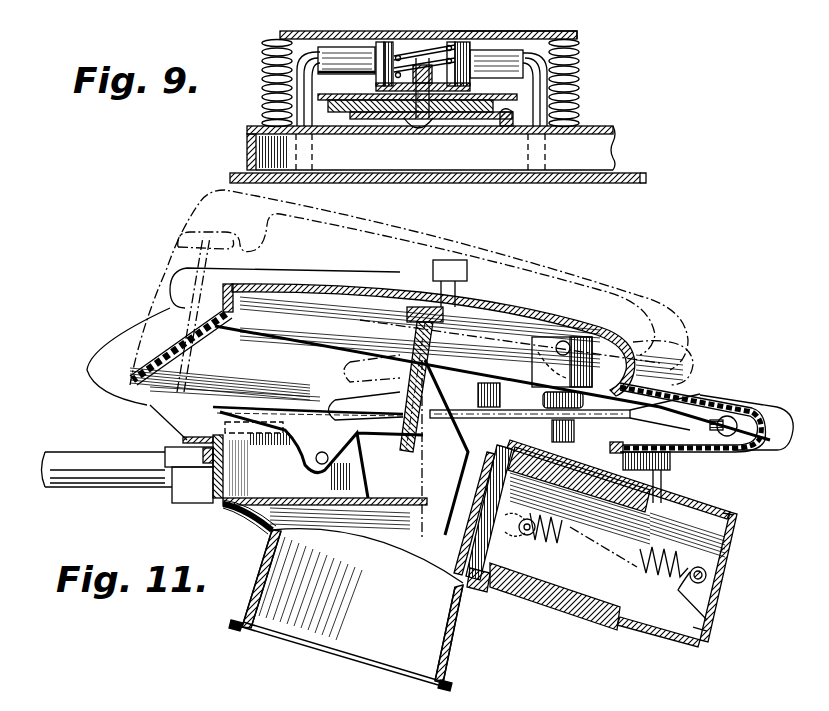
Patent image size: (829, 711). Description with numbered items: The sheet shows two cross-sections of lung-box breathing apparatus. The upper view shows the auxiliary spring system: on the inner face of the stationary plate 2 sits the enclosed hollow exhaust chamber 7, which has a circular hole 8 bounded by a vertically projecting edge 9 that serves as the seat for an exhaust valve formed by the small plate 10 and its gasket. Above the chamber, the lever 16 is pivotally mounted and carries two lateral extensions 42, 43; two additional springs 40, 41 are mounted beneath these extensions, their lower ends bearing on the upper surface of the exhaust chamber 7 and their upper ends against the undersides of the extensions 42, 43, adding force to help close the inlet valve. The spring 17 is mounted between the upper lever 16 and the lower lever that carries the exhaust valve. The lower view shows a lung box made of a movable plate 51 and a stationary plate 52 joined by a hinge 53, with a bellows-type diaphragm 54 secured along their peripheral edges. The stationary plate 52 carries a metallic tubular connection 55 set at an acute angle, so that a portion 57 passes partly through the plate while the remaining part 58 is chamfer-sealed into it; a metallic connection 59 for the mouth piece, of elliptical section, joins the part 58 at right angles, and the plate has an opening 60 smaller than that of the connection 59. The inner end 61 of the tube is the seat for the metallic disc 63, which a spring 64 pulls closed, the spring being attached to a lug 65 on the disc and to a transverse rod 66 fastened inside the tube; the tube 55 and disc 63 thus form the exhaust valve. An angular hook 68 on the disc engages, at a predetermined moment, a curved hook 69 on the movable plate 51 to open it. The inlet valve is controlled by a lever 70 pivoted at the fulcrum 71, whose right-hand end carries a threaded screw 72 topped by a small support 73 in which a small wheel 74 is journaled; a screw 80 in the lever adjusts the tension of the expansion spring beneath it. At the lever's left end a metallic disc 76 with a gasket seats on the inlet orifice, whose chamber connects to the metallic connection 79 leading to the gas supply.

In FIG. 9, the stationary plate 2 is at (596, 184).
In FIG. 9, the exhaust chamber 7 is at (268, 151).
In FIG. 9, the circular hole 8 is at (373, 131).
In FIG. 9, the vertically projecting edge 9 is at (512, 125).
In FIG. 9, the small plate 10 is at (457, 130).
In FIG. 9, the lever 16 is at (418, 31).
In FIG. 9, the spring 17 is at (428, 47).
In FIG. 9, the additional spring 40 is at (262, 50).
In FIG. 9, the additional spring 41 is at (578, 84).
In FIG. 9, the lateral extension 42 is at (320, 31).
In FIG. 9, the lateral extension 43 is at (522, 31).
In FIG. 11, the movable plate 51 is at (527, 310).
In FIG. 11, the stationary plate 52 is at (197, 497).
In FIG. 11, the hinge 53 is at (733, 436).
In FIG. 11, the diaphragm 54 is at (714, 398).
In FIG. 11, the metallic tubular connection 55 is at (650, 620).
In FIG. 11, the portion of the connection 57 is at (653, 493).
In FIG. 11, the remaining part 58 is at (557, 613).
In FIG. 11, the metallic connection for the mouth piece 59 is at (353, 643).
In FIG. 11, the opening 60 is at (406, 510).
In FIG. 11, the inner end of the tubular element 61 is at (487, 594).
In FIG. 11, the metallic disc 63 is at (463, 566).
In FIG. 11, the spring 64 is at (712, 607).
In FIG. 11, the lug 65 is at (535, 532).
In FIG. 11, the transverse rod 66 is at (710, 578).
In FIG. 11, the angular hook 68 is at (352, 395).
In FIG. 11, the curved hook 69 is at (398, 450).
In FIG. 11, the lever 70 is at (278, 405).
In FIG. 11, the fulcrum 71 is at (335, 461).
In FIG. 11, the threaded screw 72 is at (492, 383).
In FIG. 11, the small support 73 is at (532, 363).
In FIG. 11, the small wheel 74 is at (533, 322).
In FIG. 11, the metallic disc 76 is at (248, 428).
In FIG. 11, the metallic connection 79 is at (107, 490).
In FIG. 11, the screw 80 is at (478, 397).